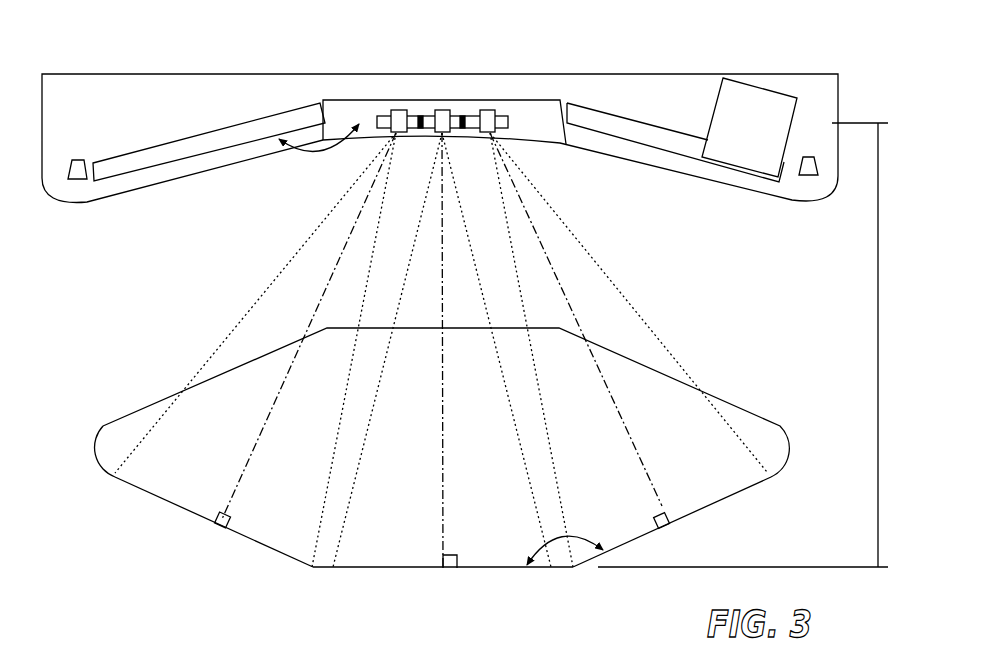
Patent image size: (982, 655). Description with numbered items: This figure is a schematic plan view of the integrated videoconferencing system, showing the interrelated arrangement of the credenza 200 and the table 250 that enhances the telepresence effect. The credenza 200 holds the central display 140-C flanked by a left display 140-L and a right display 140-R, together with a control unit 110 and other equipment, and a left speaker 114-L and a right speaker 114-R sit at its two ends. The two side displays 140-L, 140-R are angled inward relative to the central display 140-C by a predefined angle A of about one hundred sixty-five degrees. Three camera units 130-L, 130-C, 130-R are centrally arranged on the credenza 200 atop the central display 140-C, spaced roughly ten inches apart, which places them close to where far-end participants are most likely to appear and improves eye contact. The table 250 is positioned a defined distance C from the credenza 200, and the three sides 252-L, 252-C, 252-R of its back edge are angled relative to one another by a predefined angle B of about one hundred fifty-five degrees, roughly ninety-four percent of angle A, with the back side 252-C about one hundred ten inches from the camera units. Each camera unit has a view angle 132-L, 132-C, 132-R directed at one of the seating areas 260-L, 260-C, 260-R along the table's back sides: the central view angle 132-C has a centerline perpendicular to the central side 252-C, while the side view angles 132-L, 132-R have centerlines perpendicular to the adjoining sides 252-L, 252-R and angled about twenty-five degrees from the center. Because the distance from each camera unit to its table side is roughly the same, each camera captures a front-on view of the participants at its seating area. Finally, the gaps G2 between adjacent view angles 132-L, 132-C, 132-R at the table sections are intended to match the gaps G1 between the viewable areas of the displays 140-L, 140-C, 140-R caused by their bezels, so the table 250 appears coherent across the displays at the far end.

The credenza 200 is at (100, 74).
The control unit 110 is at (750, 85).
The left speaker 114-L is at (78, 182).
The right speaker 114-R is at (806, 178).
The left camera unit 130-L is at (397, 109).
The central camera unit 130-C is at (441, 109).
The right camera unit 130-R is at (494, 109).
The left camera view angle 132-L is at (289, 262).
The center camera view angle 132-C is at (417, 231).
The right camera view angle 132-R is at (585, 241).
The left display 140-L is at (165, 168).
The central display 140-C is at (534, 125).
The right display 140-R is at (688, 156).
The table 250 is at (146, 407).
The left back side of table 252-L is at (160, 502).
The central back side of table 252-C is at (368, 572).
The right back side of table 252-R is at (717, 500).
The left seating area 260-L is at (228, 564).
The central seating area 260-C is at (472, 598).
The right seating area 260-R is at (732, 558).
The gap between display viewable areas G1 is at (322, 114).
The gap between camera view angles G2 is at (311, 570).
The display angle A is at (328, 178).
The table side angle B is at (595, 536).
The table distance C is at (863, 355).